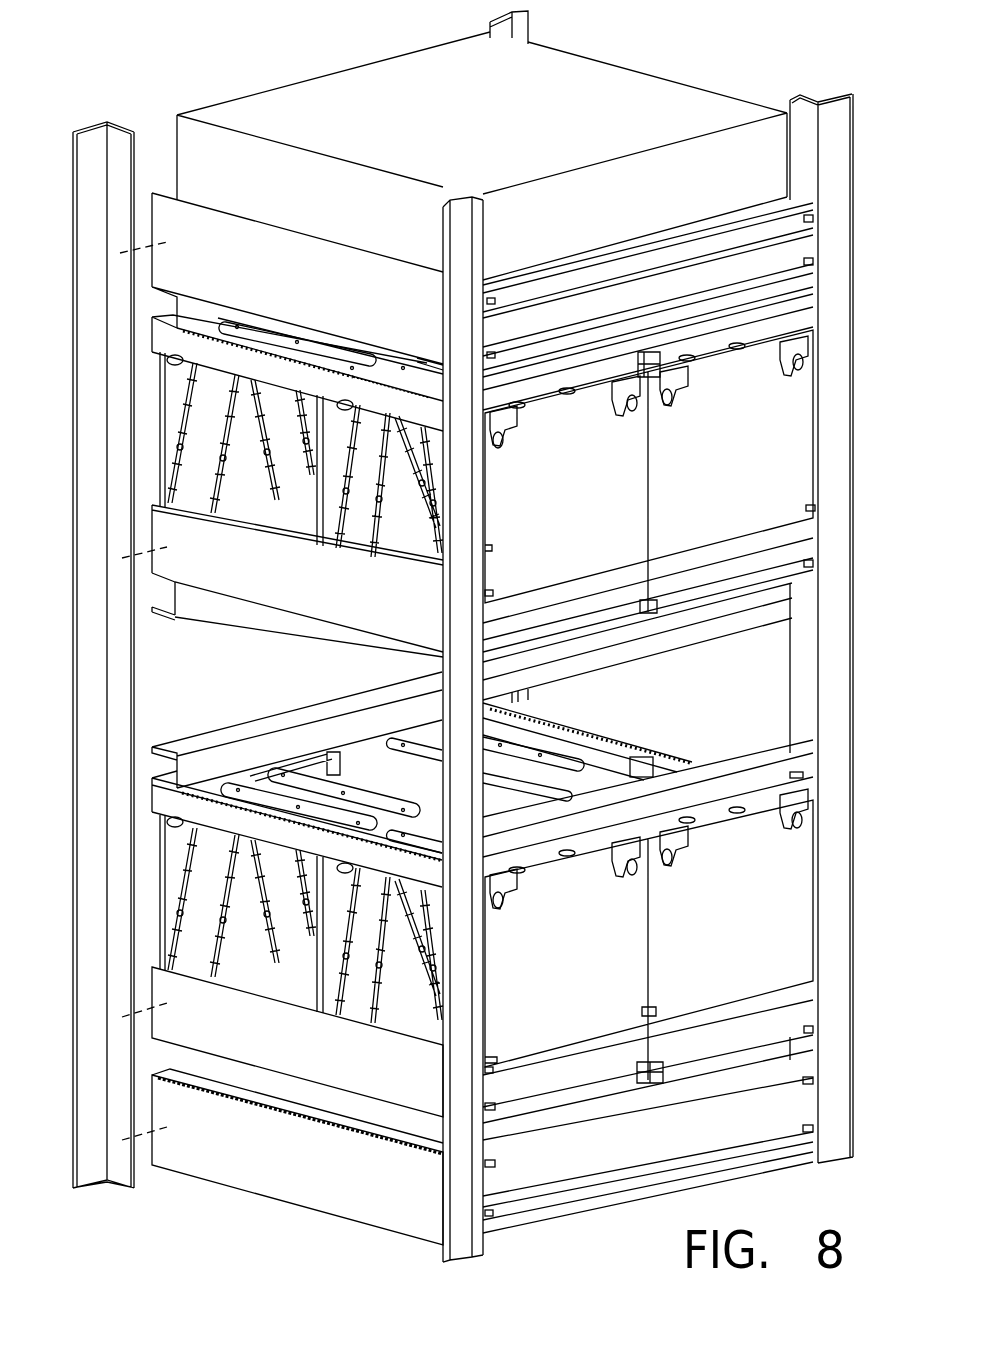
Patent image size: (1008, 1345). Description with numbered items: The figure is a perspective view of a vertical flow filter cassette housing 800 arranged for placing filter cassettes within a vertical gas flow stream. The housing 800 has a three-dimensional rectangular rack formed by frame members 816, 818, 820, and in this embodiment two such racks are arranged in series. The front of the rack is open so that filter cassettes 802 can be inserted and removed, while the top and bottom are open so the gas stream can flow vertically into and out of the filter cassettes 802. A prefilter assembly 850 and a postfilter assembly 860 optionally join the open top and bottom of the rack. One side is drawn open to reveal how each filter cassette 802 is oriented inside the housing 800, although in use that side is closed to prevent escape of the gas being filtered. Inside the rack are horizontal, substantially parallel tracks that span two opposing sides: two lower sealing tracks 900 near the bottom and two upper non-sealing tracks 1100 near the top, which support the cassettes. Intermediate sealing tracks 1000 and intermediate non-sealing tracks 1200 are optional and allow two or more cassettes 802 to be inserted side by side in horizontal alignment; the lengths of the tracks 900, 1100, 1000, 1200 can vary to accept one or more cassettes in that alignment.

The vertical flow filter cassette housing 800 is at (165, 73).
The filter cassette 802 is at (793, 390).
The frame member 816 is at (307, 367).
The frame member 818 is at (838, 498).
The frame member 820 is at (202, 765).
The prefilter assembly 850 is at (707, 93).
The postfilter assembly 860 is at (592, 1176).
The lower sealing track 900 is at (473, 1115).
The intermediate sealing track 1000 is at (654, 1087).
The upper non-sealing track 1100 is at (494, 888).
The intermediate non-sealing track 1200 is at (650, 355).